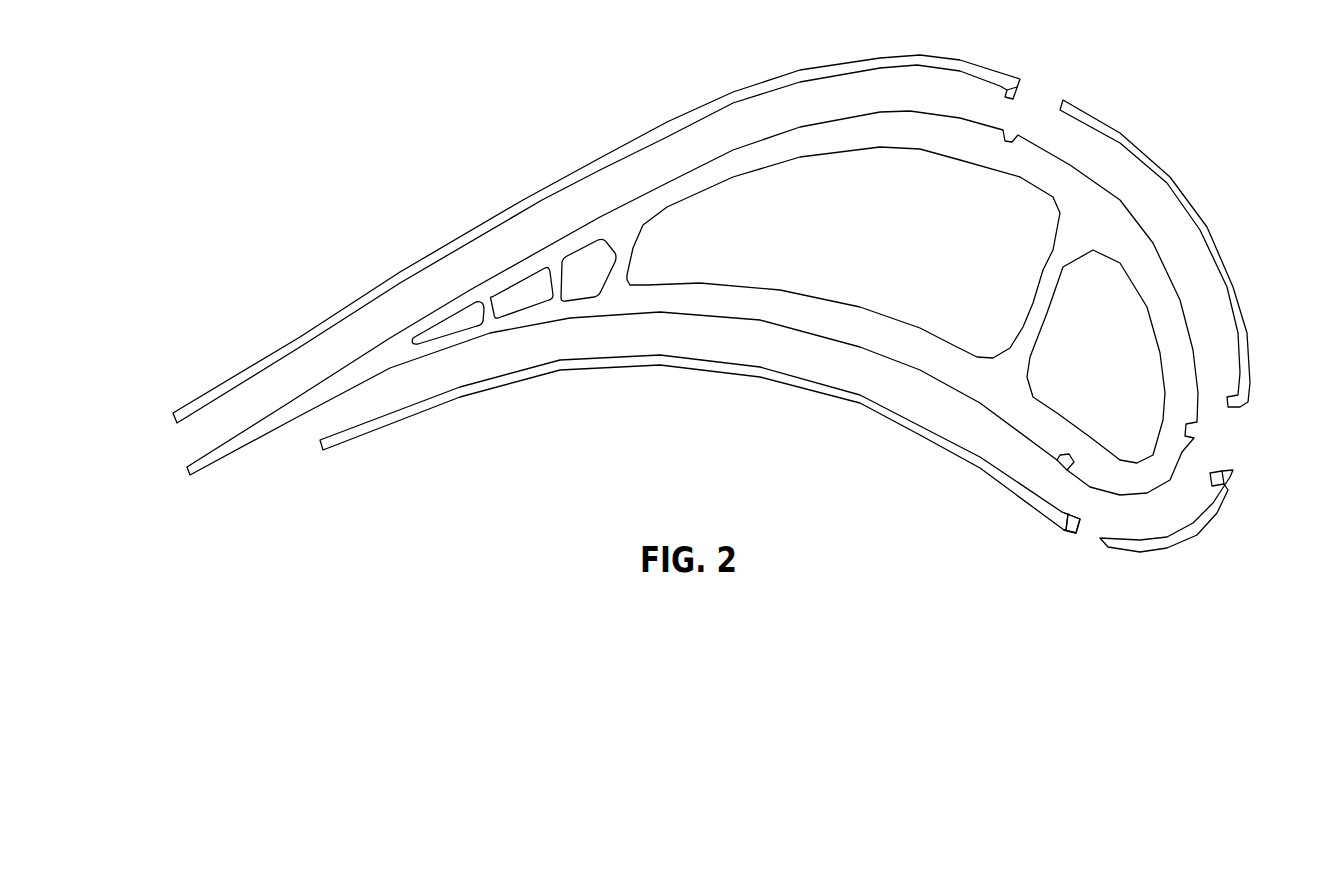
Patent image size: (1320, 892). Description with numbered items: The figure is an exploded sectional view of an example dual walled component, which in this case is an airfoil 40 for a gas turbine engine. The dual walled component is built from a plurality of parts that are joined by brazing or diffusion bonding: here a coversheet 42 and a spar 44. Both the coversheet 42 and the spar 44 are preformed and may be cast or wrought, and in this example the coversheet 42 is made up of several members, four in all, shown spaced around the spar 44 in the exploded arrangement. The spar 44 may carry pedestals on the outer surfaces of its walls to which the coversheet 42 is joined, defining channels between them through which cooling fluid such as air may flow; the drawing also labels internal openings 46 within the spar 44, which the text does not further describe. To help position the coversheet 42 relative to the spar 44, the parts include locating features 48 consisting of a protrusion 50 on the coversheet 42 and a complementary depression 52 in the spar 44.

The airfoil 40 is at (170, 36).
The coversheet 42 is at (563, 175).
The spar 44 is at (1070, 187).
The internal cavity 46 is at (496, 320).
The locating features 48 is at (1087, 520).
The protrusion 50 is at (1062, 527).
The depression 52 is at (1062, 463).